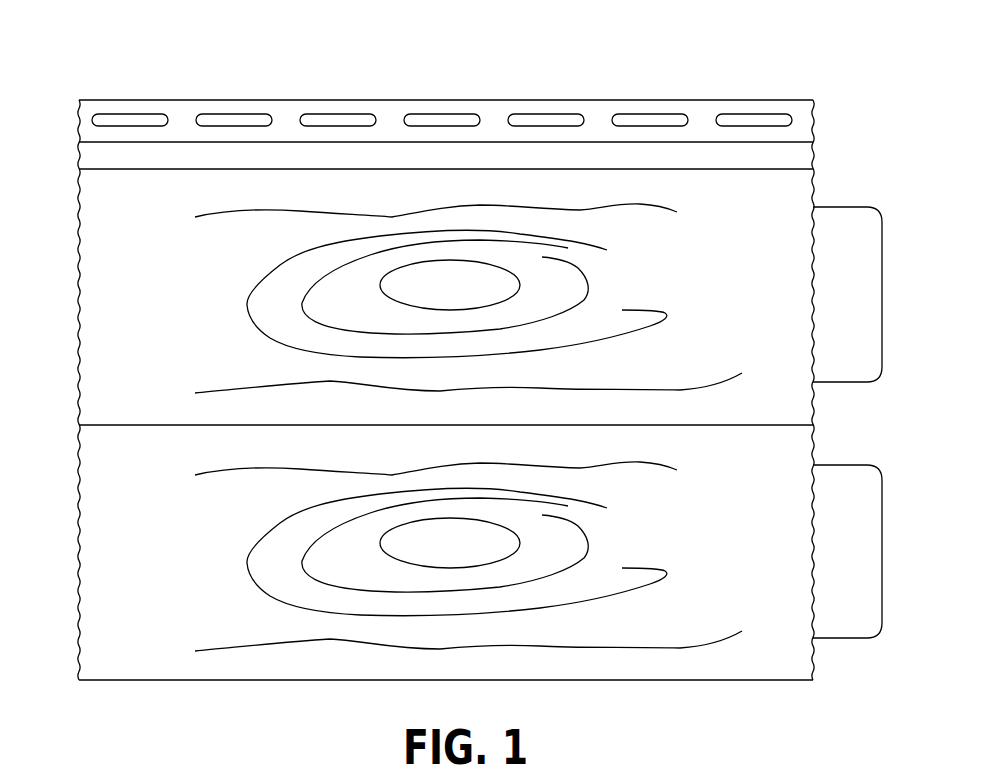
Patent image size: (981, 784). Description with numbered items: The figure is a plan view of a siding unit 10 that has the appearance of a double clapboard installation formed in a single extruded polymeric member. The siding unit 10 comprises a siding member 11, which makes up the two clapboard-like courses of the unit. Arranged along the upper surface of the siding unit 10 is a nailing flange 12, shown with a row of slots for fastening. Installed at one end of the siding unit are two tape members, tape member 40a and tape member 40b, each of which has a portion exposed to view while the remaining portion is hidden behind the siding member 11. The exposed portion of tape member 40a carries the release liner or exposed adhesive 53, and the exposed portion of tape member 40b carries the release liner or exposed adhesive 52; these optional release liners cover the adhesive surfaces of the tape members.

The siding unit 10 is at (581, 50).
The siding member 11 is at (78, 294).
The nailing flange 12 is at (192, 100).
The tape member 40a is at (882, 285).
The tape member 40b is at (882, 540).
The release liner/exposed adhesive 53 is at (857, 300).
The release liner/exposed adhesive 52 is at (857, 558).